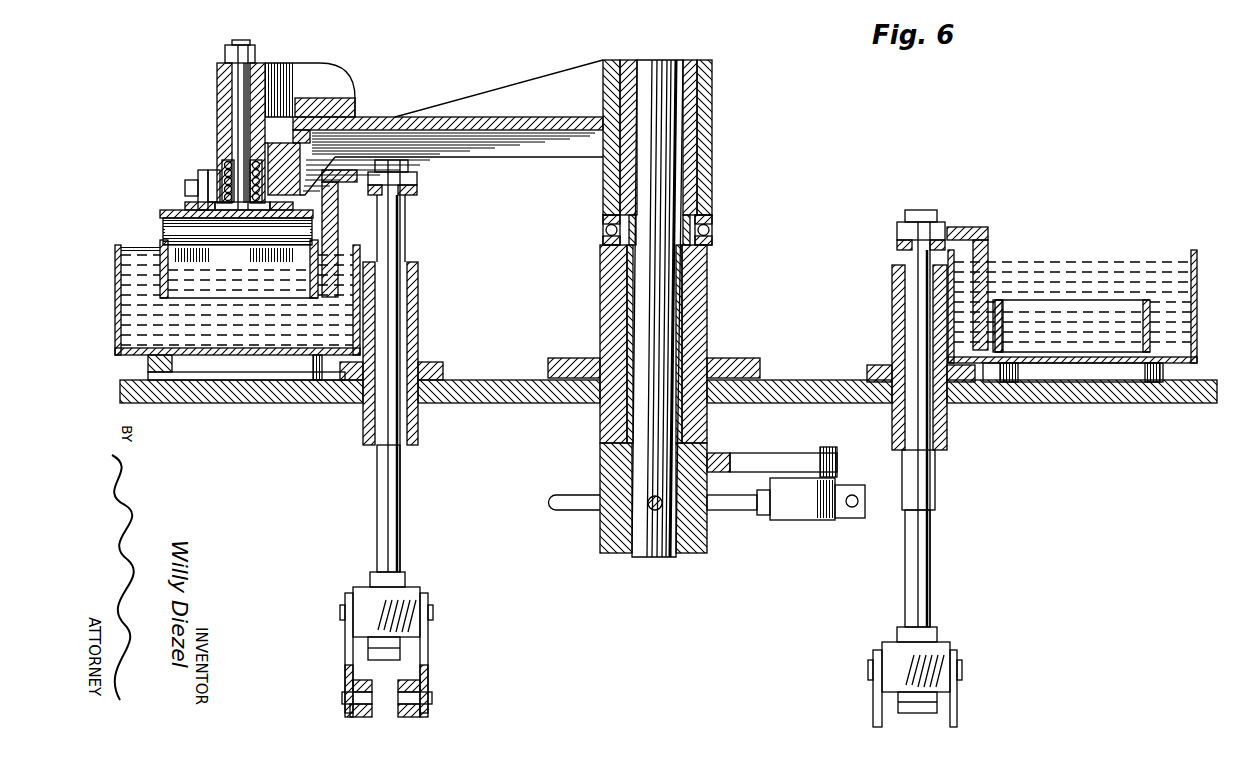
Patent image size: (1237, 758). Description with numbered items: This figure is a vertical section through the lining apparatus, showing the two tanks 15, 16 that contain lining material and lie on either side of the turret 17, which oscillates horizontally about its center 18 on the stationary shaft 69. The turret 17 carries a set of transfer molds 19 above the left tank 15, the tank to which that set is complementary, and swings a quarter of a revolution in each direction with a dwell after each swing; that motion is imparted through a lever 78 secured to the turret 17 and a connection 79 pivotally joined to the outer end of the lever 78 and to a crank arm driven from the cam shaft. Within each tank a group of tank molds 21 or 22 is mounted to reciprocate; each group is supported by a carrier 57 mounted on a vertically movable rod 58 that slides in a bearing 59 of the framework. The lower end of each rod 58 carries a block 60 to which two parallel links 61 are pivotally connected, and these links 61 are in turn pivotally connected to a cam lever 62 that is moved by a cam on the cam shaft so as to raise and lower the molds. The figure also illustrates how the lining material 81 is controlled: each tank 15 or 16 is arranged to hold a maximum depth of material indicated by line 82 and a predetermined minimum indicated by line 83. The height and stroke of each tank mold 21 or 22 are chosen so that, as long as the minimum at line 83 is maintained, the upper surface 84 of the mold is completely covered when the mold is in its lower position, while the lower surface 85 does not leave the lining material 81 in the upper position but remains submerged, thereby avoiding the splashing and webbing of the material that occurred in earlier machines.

The tank 15 is at (118, 302).
The tank 16 is at (1197, 330).
The turret 17 is at (538, 76).
The center 18 is at (715, 54).
The set of transfer molds 19 is at (182, 198).
The group of tank molds 21 is at (335, 242).
The group of tank molds 22 is at (1122, 410).
The carrier 57 is at (375, 217).
The rod 58 is at (408, 308).
The bearing 59 is at (419, 347).
The block 60 is at (405, 597).
The parallel links 61 is at (345, 648).
The cam lever 62 is at (402, 706).
The stationary shaft 69 is at (661, 177).
The lever 78 is at (752, 458).
The connection 79 is at (567, 490).
The lining material 81 is at (135, 325).
The maximum depth line 82 is at (120, 247).
The minimum depth line 83 is at (125, 275).
The upper surface of tank mold 84 is at (160, 242).
The lower surface of tank mold 85 is at (240, 300).